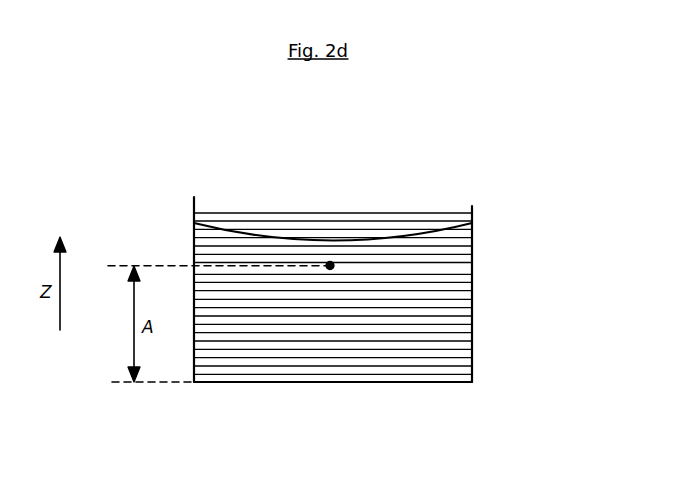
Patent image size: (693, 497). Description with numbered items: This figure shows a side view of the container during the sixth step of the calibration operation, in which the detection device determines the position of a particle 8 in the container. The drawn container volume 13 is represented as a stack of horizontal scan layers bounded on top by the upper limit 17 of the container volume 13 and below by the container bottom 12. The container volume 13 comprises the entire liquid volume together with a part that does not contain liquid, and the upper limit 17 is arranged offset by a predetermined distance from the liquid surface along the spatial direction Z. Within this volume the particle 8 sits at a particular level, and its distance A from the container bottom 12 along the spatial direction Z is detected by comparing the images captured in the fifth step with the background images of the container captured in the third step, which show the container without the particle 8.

The particle 8 is at (333, 262).
The container bottom 12 is at (258, 382).
The container volume 13 is at (498, 234).
The upper limit of the container volume 17 is at (277, 213).